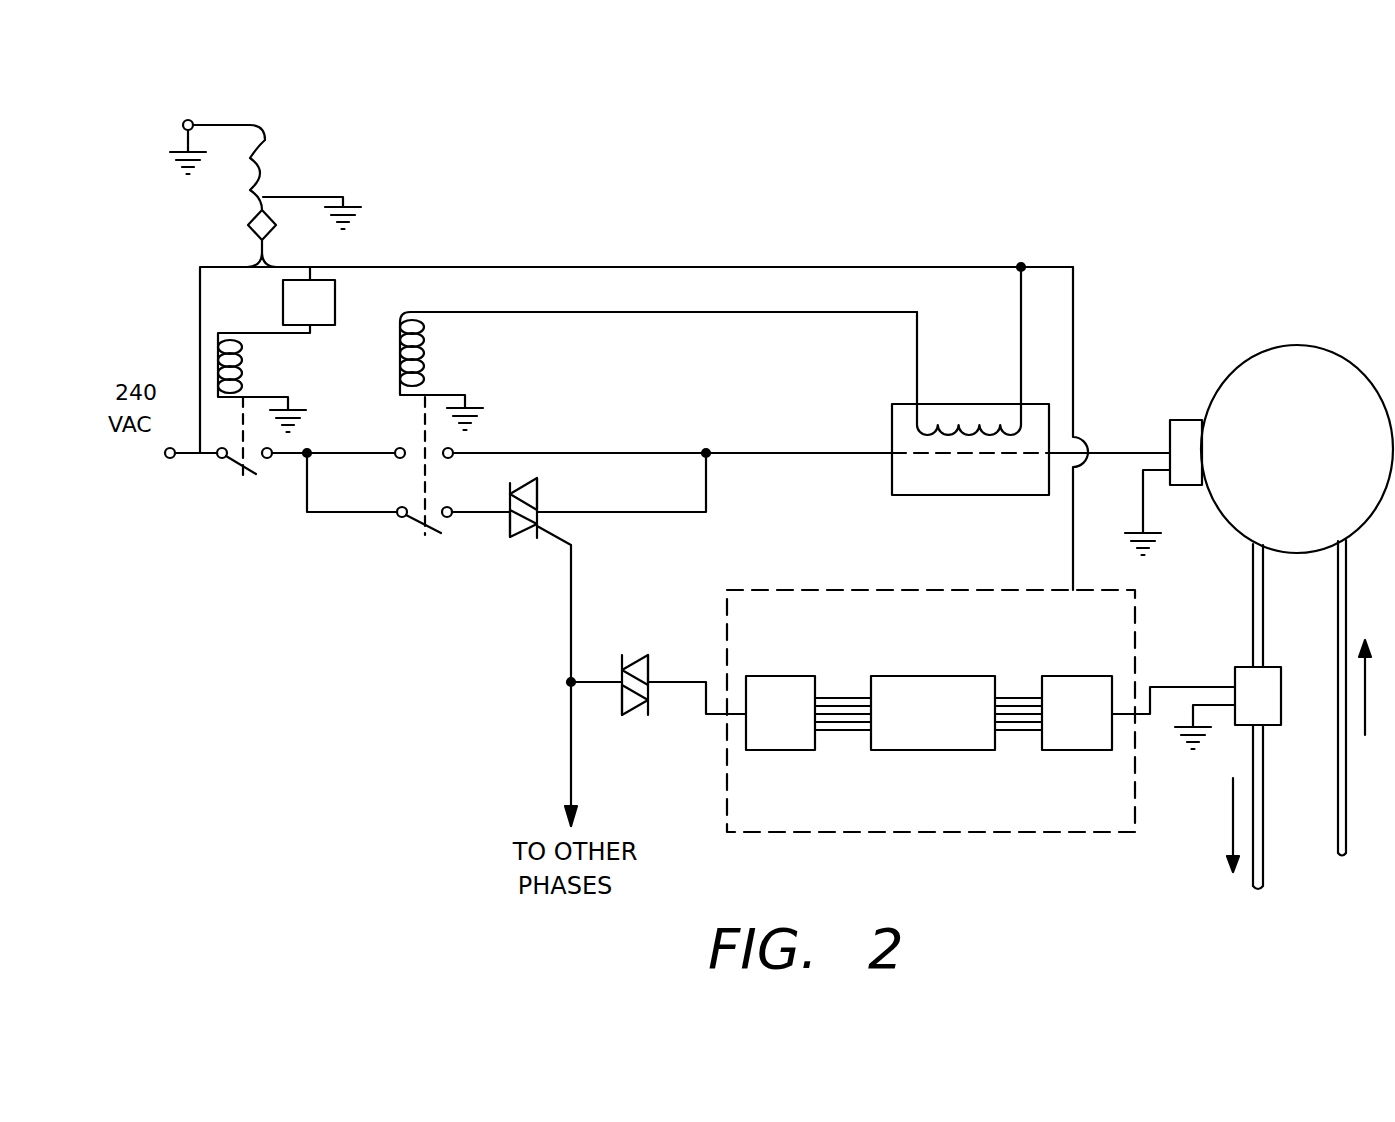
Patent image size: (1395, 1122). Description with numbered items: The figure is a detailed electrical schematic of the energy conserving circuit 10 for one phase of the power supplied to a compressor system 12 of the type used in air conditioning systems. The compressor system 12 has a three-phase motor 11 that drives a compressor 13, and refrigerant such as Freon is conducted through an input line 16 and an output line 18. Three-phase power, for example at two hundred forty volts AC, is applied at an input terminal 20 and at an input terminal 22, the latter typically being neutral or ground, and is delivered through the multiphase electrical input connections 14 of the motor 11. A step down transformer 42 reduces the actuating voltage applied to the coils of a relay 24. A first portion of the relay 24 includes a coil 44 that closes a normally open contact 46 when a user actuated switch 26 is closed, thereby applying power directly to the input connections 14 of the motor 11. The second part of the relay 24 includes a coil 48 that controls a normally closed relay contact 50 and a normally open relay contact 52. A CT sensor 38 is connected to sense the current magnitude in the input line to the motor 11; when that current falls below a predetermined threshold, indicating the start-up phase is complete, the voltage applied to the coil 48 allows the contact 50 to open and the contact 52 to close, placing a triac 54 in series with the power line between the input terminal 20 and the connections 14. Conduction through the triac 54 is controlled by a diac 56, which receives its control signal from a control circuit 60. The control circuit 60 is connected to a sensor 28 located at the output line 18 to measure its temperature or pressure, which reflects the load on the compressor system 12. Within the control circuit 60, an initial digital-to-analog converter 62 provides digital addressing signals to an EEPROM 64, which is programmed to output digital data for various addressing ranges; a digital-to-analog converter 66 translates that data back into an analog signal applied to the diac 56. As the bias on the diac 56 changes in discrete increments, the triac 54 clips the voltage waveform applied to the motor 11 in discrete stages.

The circuit 10 is at (1114, 292).
The three-phase motor 11 is at (1170, 423).
The compressor system 12 is at (1358, 557).
The compressor 13 is at (1322, 347).
The multiphase electrical input connections 14 is at (1169, 476).
The input line 16 is at (1373, 580).
The output line 18 is at (1253, 623).
The input terminal 20 is at (168, 459).
The input terminal 22 is at (188, 119).
The relay 24 is at (488, 243).
The user actuated switch 26 is at (337, 301).
The sensor 28 is at (1282, 676).
The CT sensor 38 is at (892, 485).
The step down transformer 42 is at (278, 184).
The coil 44 is at (242, 360).
The normally open contact 46 is at (223, 459).
The coil 48 is at (424, 350).
The normally closed relay contact 50 is at (447, 459).
The normally open relay contact 52 is at (401, 518).
The triac 54 is at (509, 533).
The diac 56 is at (634, 714).
The control circuit 60 is at (787, 832).
The digital-to-analog converter 62 is at (1048, 750).
The EEPROM 64 is at (918, 750).
The digital-to-analog converter 66 is at (770, 750).